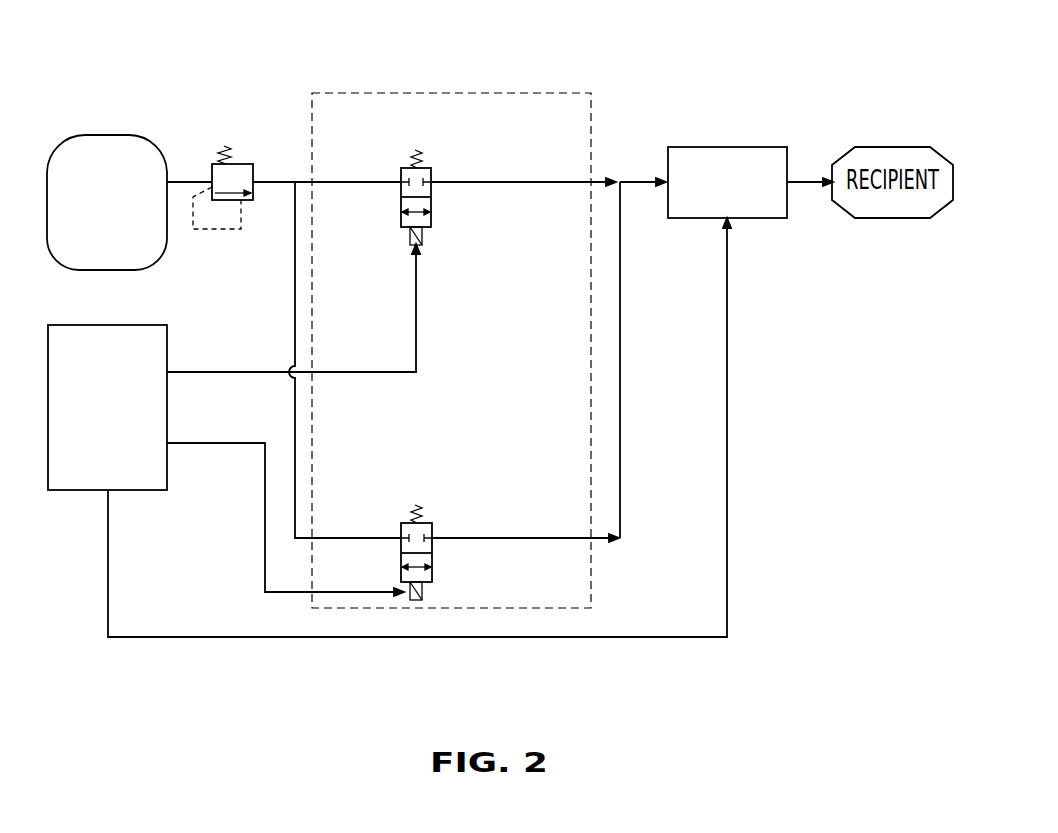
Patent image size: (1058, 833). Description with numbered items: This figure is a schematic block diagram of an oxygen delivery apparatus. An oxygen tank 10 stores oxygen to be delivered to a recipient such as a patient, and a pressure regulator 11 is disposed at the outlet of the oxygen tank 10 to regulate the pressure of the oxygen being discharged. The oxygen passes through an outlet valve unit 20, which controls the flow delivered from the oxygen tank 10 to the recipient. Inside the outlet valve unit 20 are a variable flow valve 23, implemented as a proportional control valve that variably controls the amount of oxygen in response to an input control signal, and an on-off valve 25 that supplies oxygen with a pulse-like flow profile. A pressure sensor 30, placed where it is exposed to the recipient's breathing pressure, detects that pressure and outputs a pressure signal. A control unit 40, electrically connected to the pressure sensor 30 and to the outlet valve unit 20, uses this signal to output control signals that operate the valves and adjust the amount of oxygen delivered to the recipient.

The oxygen tank 10 is at (107, 135).
The pressure regulator 11 is at (243, 164).
The outlet valve unit 20 is at (360, 93).
The variable flow valve 23 is at (432, 204).
The on-off valve 25 is at (432, 558).
The pressure sensor 30 is at (755, 147).
The control unit 40 is at (83, 492).